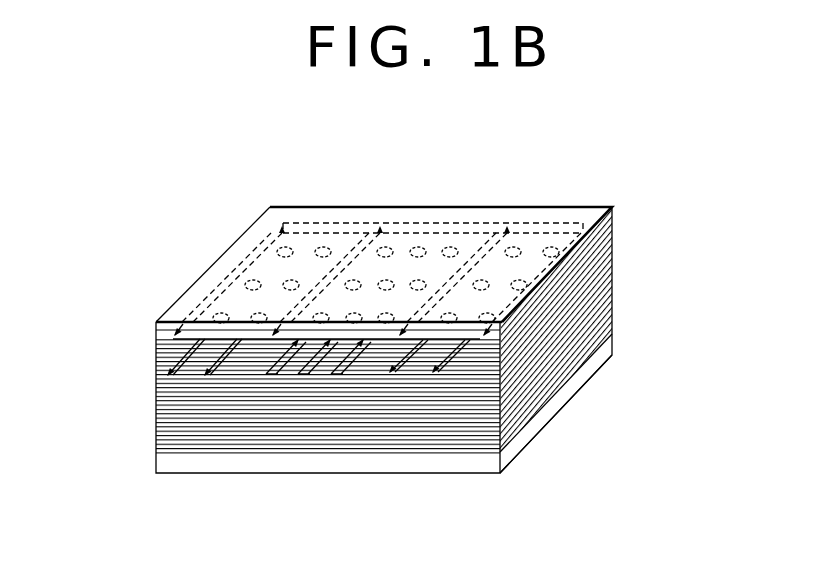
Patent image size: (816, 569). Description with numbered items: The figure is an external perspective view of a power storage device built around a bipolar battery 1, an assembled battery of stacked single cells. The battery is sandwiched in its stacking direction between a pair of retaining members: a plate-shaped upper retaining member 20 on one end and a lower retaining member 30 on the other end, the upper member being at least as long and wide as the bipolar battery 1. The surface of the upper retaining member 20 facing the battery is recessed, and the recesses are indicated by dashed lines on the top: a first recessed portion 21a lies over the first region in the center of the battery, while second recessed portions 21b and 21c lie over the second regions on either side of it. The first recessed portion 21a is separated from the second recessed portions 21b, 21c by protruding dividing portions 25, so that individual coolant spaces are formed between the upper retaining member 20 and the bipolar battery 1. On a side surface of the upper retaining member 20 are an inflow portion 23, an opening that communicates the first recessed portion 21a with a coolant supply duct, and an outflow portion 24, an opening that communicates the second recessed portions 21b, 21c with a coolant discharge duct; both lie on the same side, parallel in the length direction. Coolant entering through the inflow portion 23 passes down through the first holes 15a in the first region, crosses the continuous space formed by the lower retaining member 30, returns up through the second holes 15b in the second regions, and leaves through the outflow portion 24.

The bipolar battery 1 is at (615, 270).
The upper retaining member 20 is at (611, 203).
The lower retaining member 30 is at (603, 379).
The first recessed portion 21a is at (437, 240).
The second recessed portion 21b is at (325, 242).
The second recessed portion 21c is at (533, 243).
The dividing portion 25 is at (322, 280).
The first hole 15a is at (418, 247).
The second hole 15b is at (250, 284).
The inflow portion 23 is at (297, 340).
The outflow portion 24 is at (175, 331).